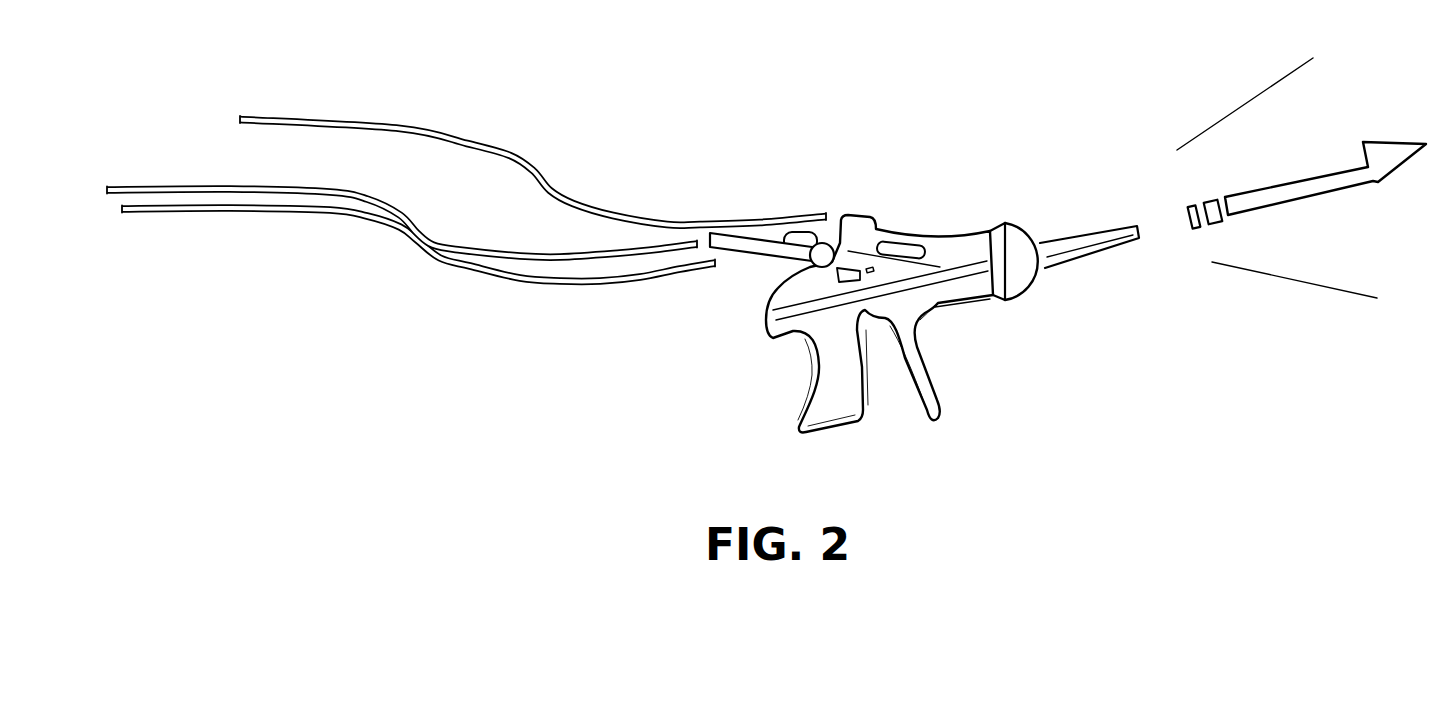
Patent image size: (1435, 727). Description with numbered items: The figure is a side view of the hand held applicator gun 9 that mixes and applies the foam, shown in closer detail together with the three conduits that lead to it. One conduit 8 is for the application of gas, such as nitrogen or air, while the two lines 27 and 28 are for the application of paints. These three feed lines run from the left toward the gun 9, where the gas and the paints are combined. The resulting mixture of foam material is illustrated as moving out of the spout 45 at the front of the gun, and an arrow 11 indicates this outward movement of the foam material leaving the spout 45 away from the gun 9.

The conduit 8 is at (535, 160).
The line 27 is at (478, 250).
The line 28 is at (487, 278).
The applicator gun 9 is at (958, 226).
The spout 45 is at (1095, 240).
The dispensing direction arrow 11 is at (1267, 178).